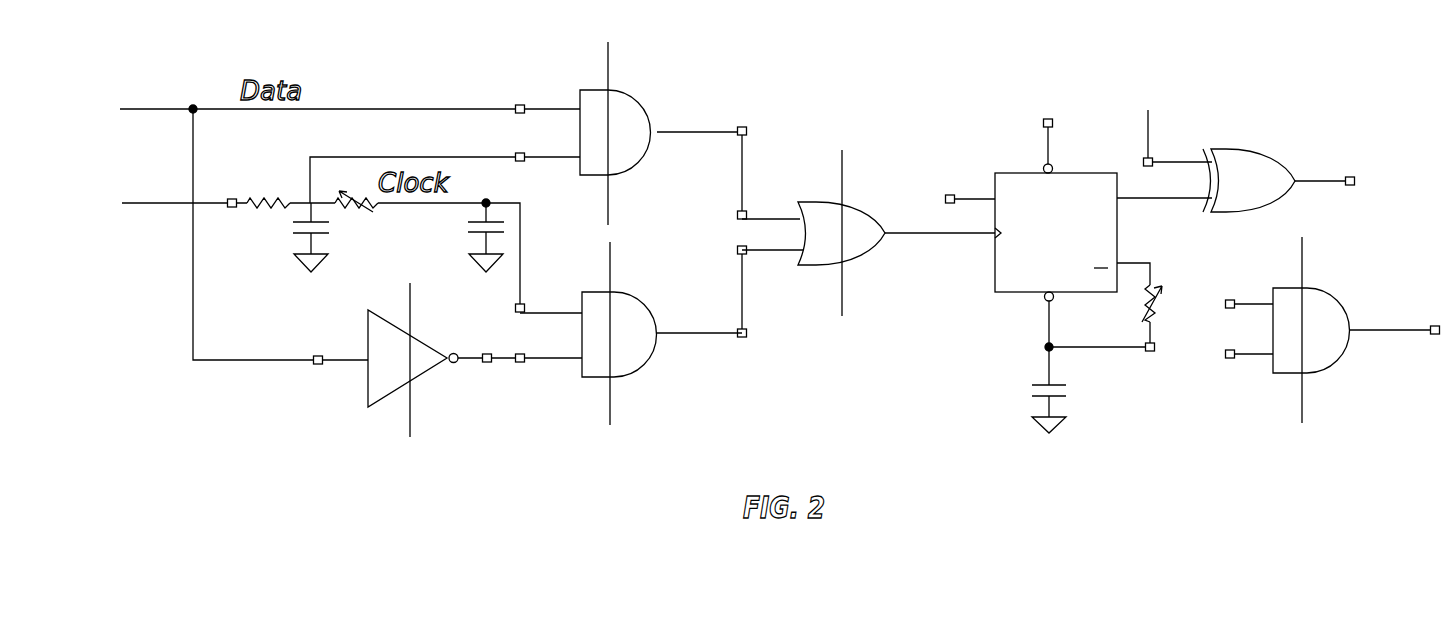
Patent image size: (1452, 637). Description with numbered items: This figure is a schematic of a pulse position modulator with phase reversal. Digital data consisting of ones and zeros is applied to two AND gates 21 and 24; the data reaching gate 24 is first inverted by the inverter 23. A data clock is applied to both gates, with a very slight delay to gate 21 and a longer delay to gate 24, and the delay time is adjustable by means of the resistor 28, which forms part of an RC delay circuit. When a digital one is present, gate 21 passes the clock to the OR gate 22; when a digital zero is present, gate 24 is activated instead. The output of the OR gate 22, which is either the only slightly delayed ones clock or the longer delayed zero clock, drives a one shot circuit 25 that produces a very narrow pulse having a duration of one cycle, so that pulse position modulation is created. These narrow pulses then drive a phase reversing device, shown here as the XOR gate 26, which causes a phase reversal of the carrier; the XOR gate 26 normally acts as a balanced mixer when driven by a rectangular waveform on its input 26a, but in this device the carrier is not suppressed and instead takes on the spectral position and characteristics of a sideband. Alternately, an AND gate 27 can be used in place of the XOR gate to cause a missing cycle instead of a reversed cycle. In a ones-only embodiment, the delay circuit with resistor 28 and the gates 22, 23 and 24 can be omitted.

The AND gate 21 is at (617, 133).
The OR gate 22 is at (838, 233).
The inverter 23 is at (406, 360).
The AND gate 24 is at (617, 333).
The one shot circuit 25 is at (1054, 280).
The XOR gate 26 is at (1250, 173).
The input of XOR gate 26a is at (1148, 110).
The AND gate 27 is at (1316, 330).
The resistor 28 is at (374, 215).